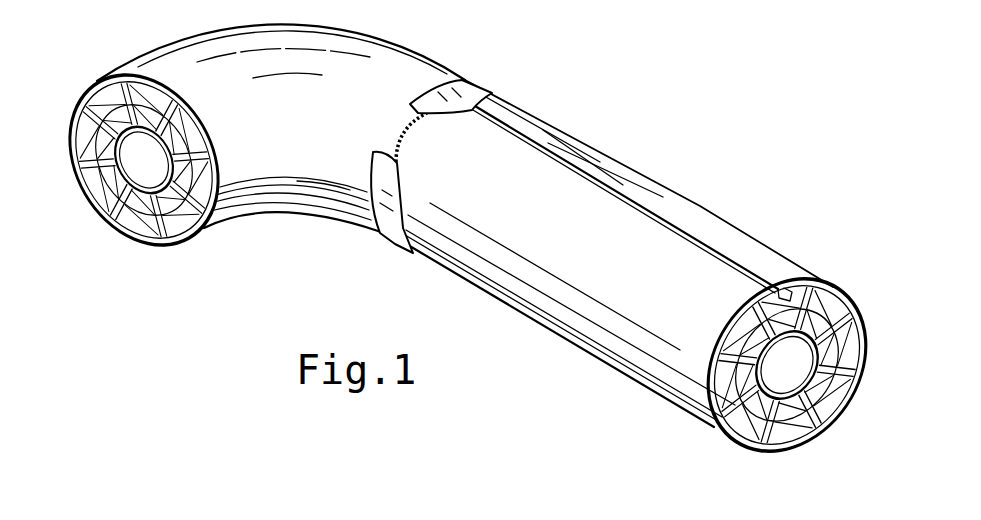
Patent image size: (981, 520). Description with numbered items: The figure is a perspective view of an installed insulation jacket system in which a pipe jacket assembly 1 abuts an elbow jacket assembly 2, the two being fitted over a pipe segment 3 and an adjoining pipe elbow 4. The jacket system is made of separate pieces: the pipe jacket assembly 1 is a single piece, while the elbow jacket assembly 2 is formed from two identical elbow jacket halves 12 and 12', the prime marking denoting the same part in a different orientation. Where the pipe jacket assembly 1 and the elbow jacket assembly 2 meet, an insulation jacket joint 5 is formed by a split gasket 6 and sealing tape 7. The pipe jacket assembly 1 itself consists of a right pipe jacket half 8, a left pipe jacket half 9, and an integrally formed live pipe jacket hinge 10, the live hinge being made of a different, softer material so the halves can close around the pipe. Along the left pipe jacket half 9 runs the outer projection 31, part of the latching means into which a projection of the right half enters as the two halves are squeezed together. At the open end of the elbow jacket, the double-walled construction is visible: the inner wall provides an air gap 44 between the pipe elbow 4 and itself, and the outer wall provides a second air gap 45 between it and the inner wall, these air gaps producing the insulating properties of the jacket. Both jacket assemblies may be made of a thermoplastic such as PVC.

The pipe jacket assembly 1 is at (733, 210).
The elbow jacket assembly 2 is at (232, 27).
The pipe segment 3 is at (776, 378).
The pipe elbow 4 is at (130, 172).
The insulation jacket joint 5 is at (401, 132).
The split gasket 6 is at (399, 147).
The sealing tape 7 is at (451, 80).
The right pipe jacket half 8 is at (849, 295).
The left pipe jacket half 9 is at (710, 430).
The live pipe jacket hinge 10 is at (800, 437).
The elbow jacket half 12 is at (292, 39).
The elbow jacket half 12' is at (303, 224).
The outer projection 31 is at (765, 252).
The air gap 44 is at (116, 212).
The air gap 45 is at (157, 227).